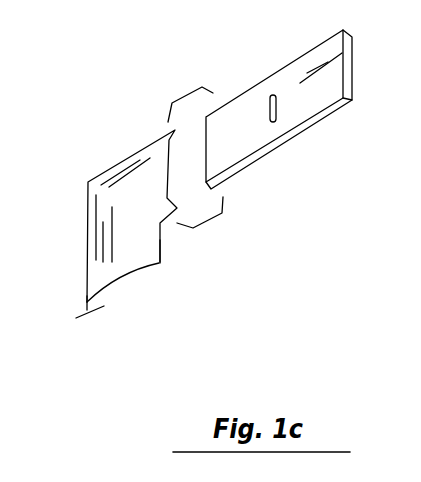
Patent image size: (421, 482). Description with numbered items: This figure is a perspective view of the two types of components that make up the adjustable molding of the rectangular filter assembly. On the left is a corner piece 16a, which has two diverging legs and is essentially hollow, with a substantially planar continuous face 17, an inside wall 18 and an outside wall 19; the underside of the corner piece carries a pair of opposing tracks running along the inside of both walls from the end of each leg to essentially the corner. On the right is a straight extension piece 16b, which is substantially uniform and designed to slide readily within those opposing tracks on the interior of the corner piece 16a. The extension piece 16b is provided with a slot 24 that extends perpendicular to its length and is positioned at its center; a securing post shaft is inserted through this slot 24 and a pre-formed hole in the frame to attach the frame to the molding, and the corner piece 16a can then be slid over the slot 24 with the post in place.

The corner piece 16a is at (132, 216).
The straight extension piece 16b is at (279, 109).
The face 17 is at (153, 170).
The inside wall 18 is at (159, 262).
The outside wall 19 is at (86, 306).
The slot 24 is at (275, 122).